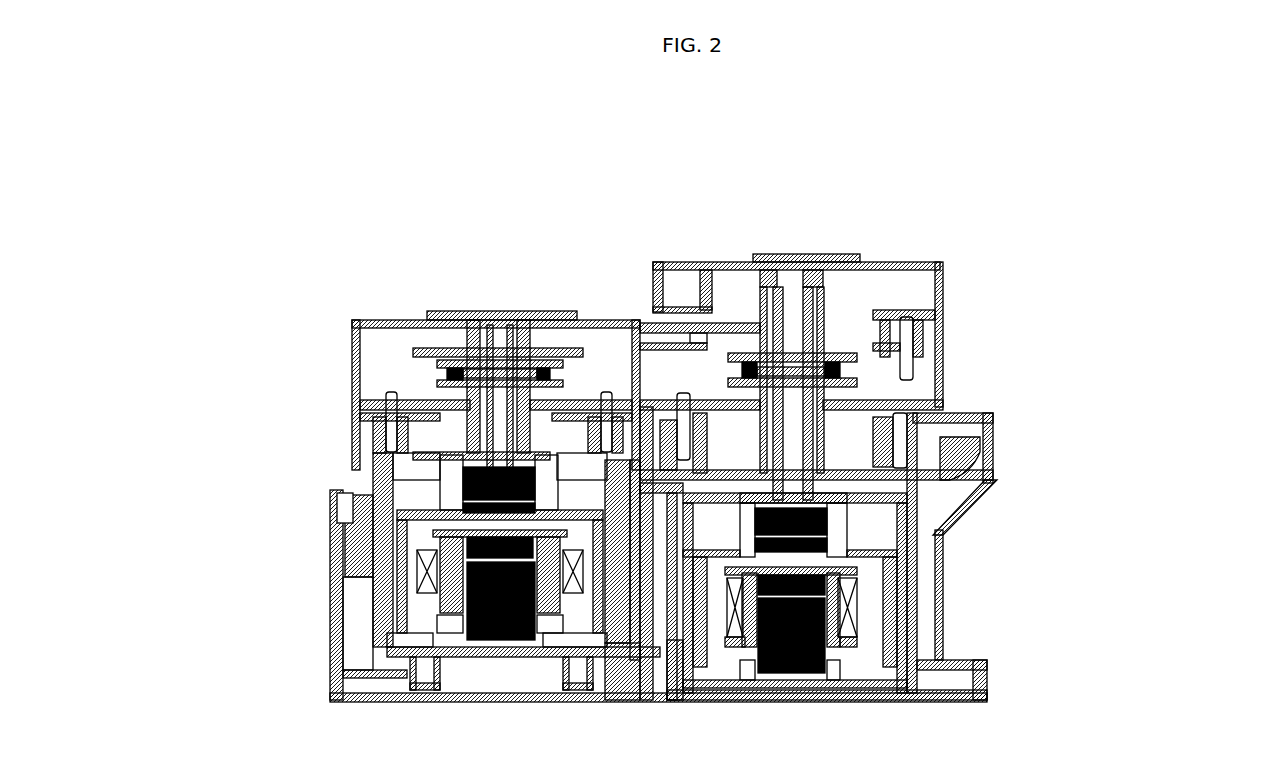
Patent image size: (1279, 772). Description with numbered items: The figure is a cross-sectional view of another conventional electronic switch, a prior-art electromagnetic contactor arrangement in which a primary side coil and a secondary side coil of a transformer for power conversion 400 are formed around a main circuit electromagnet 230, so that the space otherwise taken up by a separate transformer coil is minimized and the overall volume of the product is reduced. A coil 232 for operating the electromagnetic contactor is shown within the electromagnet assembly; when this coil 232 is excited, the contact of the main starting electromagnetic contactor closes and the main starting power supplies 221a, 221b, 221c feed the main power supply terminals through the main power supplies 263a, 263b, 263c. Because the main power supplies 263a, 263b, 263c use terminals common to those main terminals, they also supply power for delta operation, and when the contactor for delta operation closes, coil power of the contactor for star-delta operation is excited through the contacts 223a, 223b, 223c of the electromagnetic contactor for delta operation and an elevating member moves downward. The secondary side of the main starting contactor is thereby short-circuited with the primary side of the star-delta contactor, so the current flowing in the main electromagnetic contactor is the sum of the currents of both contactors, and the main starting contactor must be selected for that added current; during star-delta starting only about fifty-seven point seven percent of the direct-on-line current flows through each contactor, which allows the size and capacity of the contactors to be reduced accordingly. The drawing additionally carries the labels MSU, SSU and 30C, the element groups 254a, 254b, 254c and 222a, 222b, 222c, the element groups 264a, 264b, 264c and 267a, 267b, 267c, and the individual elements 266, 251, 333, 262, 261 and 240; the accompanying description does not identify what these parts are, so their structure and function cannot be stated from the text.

The mask supporting unit MSU is at (495, 311).
The substrate supporting unit SSU is at (788, 254).
The chamber 30C is at (664, 267).
The rotating plate 254a is at (367, 334).
The rotating plate 254b is at (367, 334).
The rotating plate 254c is at (440, 356).
The main starting power supply 221a is at (387, 403).
The main starting power supply 221b is at (387, 403).
The main starting power supply 221c is at (352, 390).
The second elastic member 222a is at (1081, 446).
The second elastic member 222b is at (1081, 446).
The second elastic member 222c is at (945, 460).
The contact of the electromagnetic contactor for delta operation 223a is at (1019, 286).
The contact of the electromagnetic contactor for delta operation 223b is at (1019, 286).
The contact of the electromagnetic contactor for delta operation 223c is at (918, 315).
The main power supply 263a is at (552, 291).
The main power supply 263b is at (552, 291).
The main power supply 263c is at (742, 372).
The support plate 264a is at (979, 381).
The support plate 264b is at (979, 381).
The support plate 264c is at (840, 366).
The rotation plate 267a is at (643, 261).
The rotation plate 267b is at (643, 261).
The rotation plate 267c is at (738, 353).
The spacer 266 is at (757, 376).
The rotor magnet 251 is at (460, 477).
The transformer for power conversion 400 is at (417, 580).
The main circuit electromagnet 230 is at (428, 618).
The coil for operating the electromagnetic contactor 232 is at (497, 650).
The bracket 333 is at (982, 478).
The magnet 262 is at (833, 523).
The rotor core 261 is at (823, 553).
The stator 240 is at (862, 633).